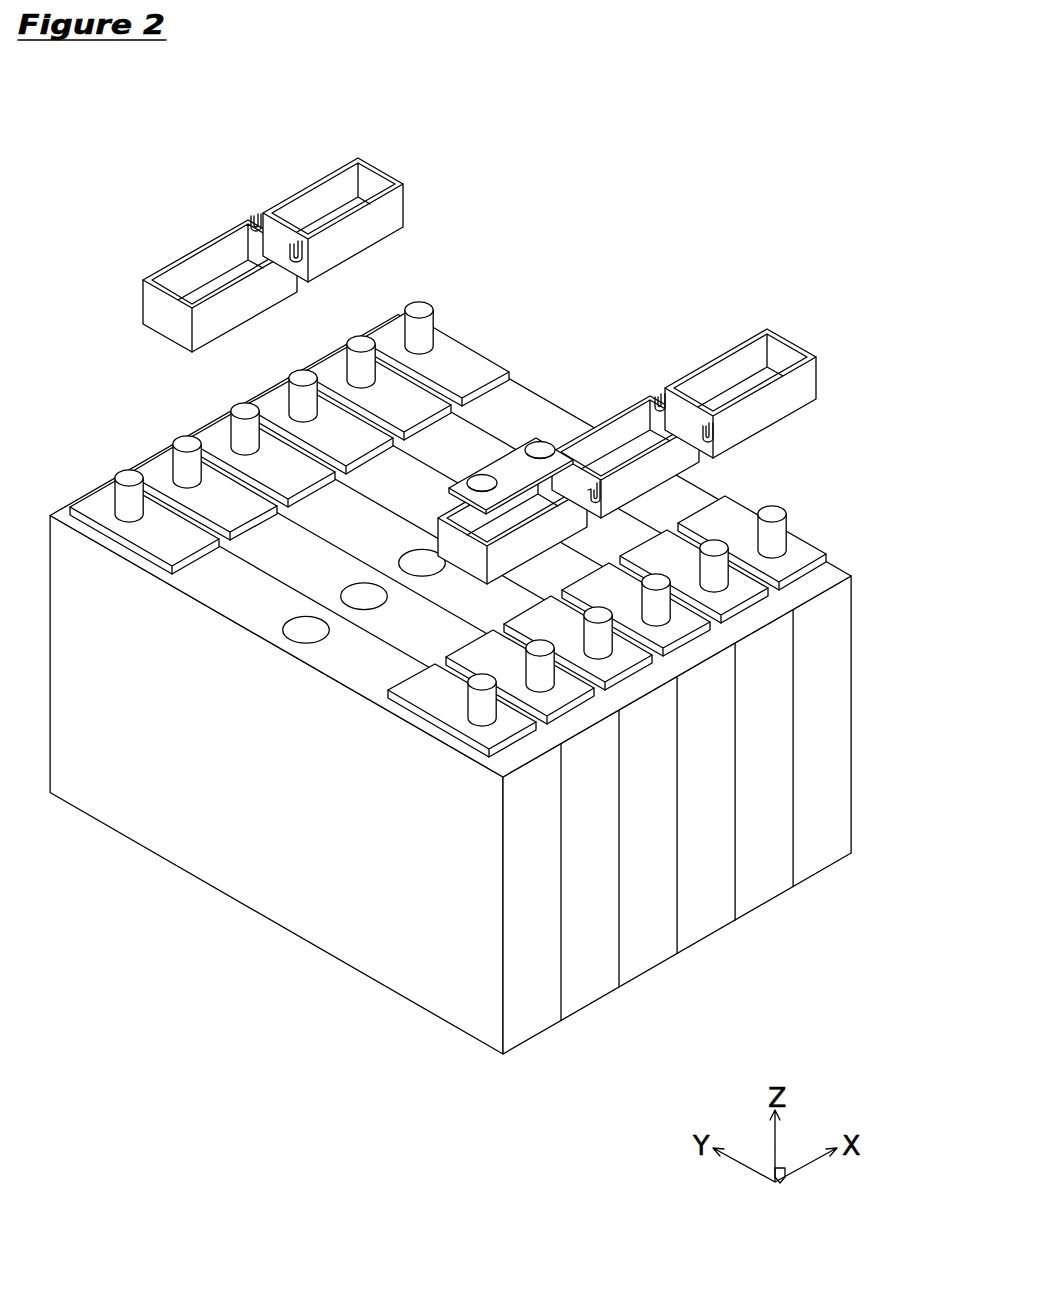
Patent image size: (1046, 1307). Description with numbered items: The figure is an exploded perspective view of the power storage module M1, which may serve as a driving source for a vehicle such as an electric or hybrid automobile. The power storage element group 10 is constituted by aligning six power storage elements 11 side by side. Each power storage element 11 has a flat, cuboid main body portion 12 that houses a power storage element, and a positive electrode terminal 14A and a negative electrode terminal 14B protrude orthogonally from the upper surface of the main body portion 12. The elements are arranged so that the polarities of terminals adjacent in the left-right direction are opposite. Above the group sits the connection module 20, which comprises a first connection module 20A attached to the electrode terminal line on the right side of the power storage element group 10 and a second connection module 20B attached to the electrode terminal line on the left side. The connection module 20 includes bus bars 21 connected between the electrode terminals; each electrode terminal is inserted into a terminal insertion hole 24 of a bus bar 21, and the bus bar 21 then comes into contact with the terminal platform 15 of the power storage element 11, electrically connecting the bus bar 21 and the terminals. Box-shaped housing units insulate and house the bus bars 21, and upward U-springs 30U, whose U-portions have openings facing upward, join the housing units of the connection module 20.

The power storage element group 10 is at (455, 712).
The power storage element 11 is at (860, 923).
The main body portion 12 is at (285, 893).
The positive electrode terminal 14A is at (356, 340).
The negative electrode terminal 14B is at (414, 302).
The terminal platform 15 is at (458, 362).
The connection module 20 is at (508, 327).
The first connection module 20A is at (806, 322).
The second connection module 20B is at (325, 148).
The bus bar 21 is at (520, 414).
The terminal insertion hole 24 is at (541, 448).
The upward U-spring 30U is at (296, 250).
The power storage module M1 is at (453, 589).